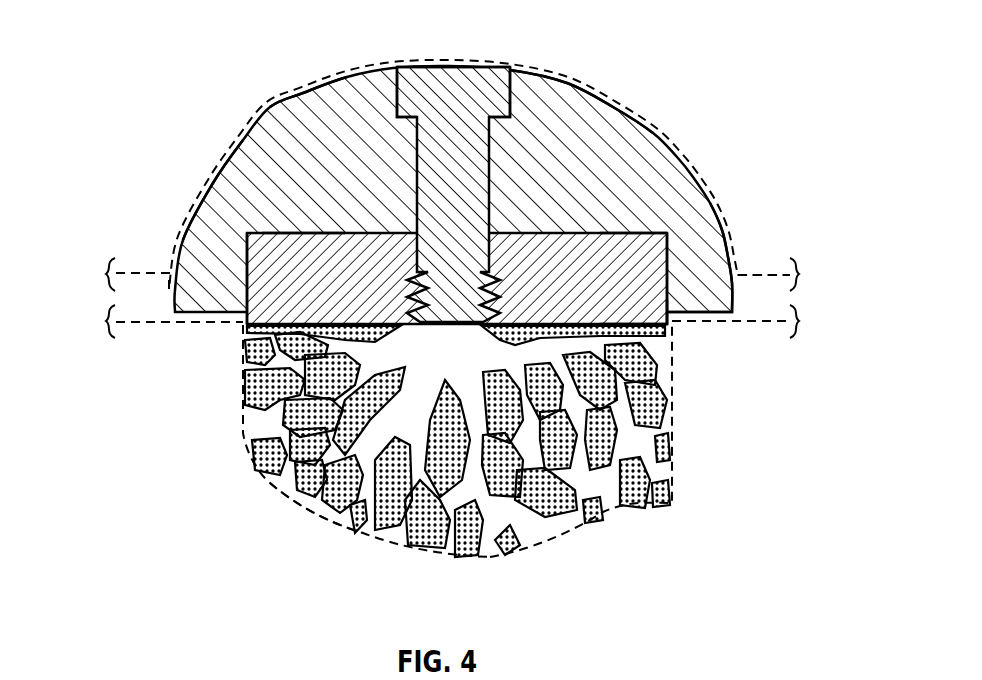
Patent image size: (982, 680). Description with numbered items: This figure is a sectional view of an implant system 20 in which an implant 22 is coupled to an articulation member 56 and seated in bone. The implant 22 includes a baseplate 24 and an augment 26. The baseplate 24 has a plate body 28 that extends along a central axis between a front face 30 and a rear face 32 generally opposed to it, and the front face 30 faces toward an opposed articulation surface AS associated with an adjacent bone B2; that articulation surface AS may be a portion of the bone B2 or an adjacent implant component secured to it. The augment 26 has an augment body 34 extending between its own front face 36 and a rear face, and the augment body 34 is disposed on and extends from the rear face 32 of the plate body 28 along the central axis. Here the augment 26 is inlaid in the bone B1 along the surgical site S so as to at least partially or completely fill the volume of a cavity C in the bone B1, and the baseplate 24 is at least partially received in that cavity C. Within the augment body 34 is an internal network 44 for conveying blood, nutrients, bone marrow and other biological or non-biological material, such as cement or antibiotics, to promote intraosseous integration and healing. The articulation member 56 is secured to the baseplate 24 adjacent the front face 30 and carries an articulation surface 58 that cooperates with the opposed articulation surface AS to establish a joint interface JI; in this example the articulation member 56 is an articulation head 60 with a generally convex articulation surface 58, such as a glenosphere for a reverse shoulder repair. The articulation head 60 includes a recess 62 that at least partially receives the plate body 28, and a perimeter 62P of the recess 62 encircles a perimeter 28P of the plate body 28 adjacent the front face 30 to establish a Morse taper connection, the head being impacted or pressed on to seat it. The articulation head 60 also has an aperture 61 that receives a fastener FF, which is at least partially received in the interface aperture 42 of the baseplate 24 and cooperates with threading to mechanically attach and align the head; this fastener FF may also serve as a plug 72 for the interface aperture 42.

The implant system 20 is at (128, 47).
The implant 22 is at (208, 90).
The baseplate 24 is at (670, 240).
The augment 26 is at (680, 453).
The plate body 28 is at (247, 248).
The perimeter of the plate body 28P is at (247, 280).
The front face 30 is at (662, 238).
The rear face 32 is at (668, 337).
The augment body 34 is at (250, 407).
The front face 36 is at (350, 320).
The interface aperture 42 is at (487, 260).
The internal network 44 is at (222, 363).
The articulation member 56 is at (208, 150).
The articulation surface 58 is at (303, 93).
The articulation head 60 is at (217, 183).
The aperture 61 is at (486, 67).
The recess 62 is at (337, 237).
The perimeter of the recess 62P is at (287, 233).
The plug 72 is at (400, 67).
The fastener FF is at (448, 72).
The joint interface JI is at (576, 69).
The opposed articulation surface AS is at (636, 113).
The surgical site S is at (756, 76).
The bone B1 is at (757, 353).
The adjacent bone B2 is at (669, 76).
The cavity C is at (328, 513).